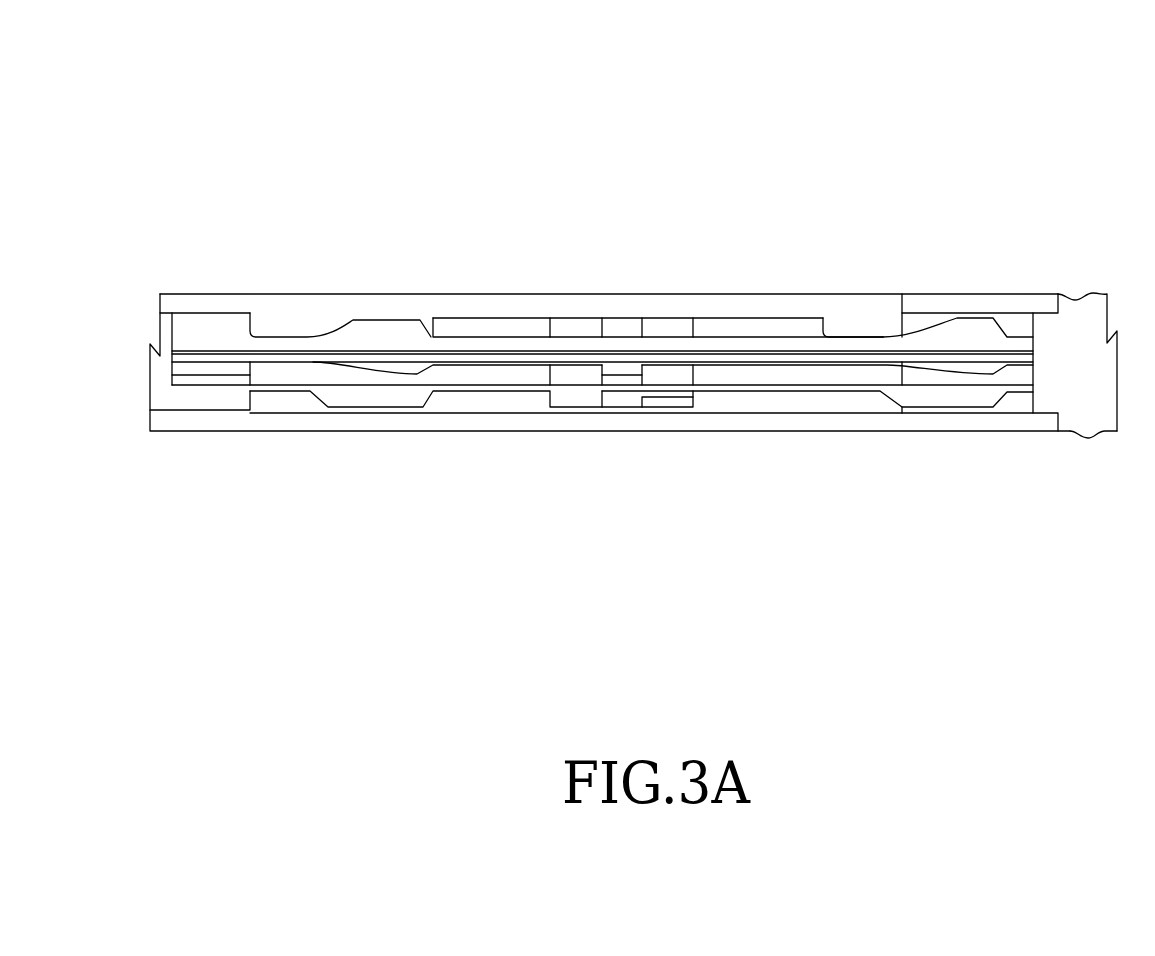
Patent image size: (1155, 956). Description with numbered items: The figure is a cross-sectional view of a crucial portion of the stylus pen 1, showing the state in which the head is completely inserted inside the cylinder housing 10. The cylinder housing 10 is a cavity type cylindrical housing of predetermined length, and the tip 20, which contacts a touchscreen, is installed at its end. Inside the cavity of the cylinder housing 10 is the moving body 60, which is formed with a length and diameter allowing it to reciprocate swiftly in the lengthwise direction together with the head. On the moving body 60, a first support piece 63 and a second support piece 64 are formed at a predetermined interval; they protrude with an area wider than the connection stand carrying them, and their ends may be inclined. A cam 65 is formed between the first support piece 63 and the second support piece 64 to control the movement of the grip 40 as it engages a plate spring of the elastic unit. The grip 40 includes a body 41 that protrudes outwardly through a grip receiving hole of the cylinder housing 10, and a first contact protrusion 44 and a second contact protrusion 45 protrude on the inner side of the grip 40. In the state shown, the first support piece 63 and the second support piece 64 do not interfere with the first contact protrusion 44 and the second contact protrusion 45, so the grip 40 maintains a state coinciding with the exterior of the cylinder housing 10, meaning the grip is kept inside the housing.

The stylus pen 1 is at (1065, 120).
The cylinder housing 10 is at (233, 288).
The tip 20 is at (1089, 284).
The grip 40 is at (729, 284).
The body 41 is at (660, 302).
The first contact protrusion 44 is at (353, 294).
The second contact protrusion 45 is at (835, 318).
The moving body 60 is at (515, 318).
The first support piece 63 is at (437, 296).
The second support piece 64 is at (970, 323).
The cam 65 is at (578, 325).